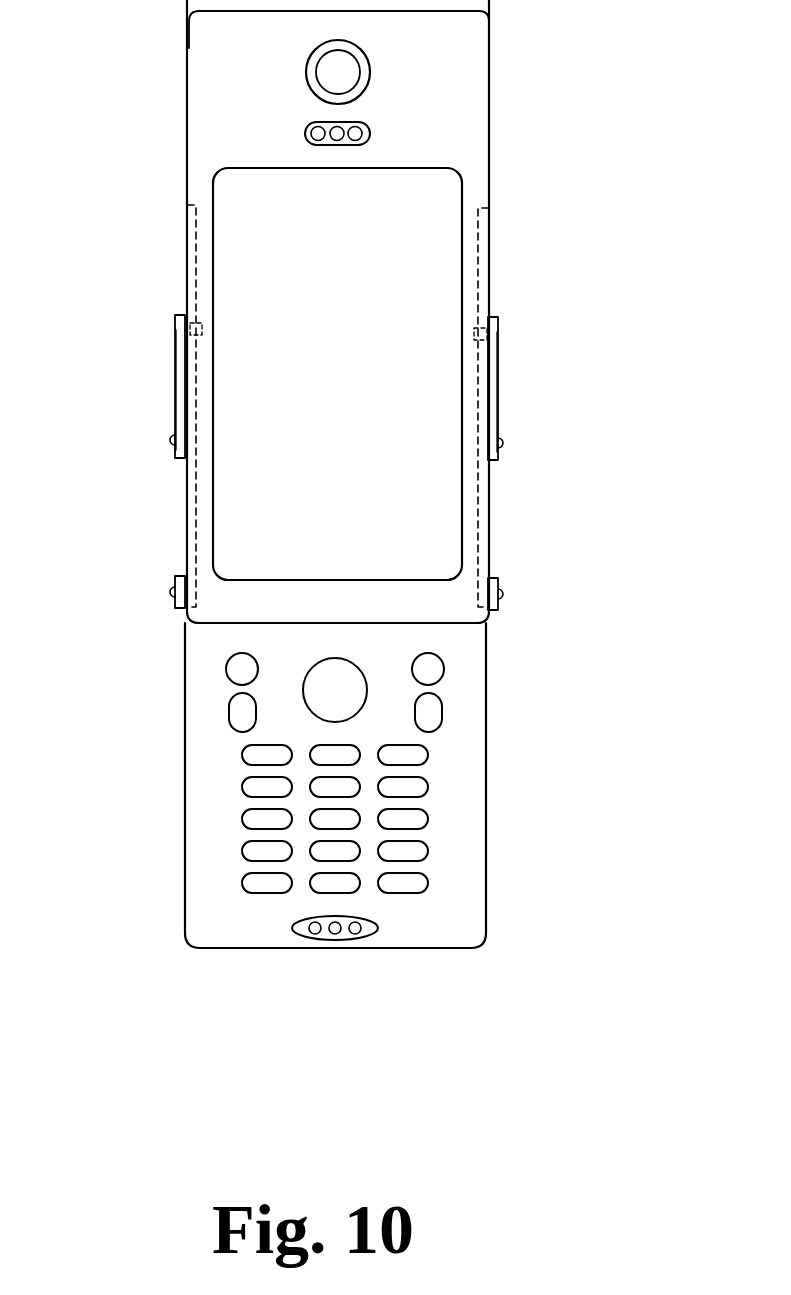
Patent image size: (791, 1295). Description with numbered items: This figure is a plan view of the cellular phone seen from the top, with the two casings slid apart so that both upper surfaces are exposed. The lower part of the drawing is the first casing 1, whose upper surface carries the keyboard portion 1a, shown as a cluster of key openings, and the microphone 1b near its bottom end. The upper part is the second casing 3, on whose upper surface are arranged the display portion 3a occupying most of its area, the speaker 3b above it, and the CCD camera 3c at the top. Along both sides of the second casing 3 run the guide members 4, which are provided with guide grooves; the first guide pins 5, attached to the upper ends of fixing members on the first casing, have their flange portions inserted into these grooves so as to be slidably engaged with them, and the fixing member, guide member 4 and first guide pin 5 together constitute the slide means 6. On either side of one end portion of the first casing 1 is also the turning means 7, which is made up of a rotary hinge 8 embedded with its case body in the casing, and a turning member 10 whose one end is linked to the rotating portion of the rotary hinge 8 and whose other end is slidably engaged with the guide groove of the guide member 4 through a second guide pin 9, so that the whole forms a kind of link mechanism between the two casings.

The first casing 1 is at (492, 750).
The keyboard portion 1a is at (428, 801).
The microphone 1b is at (336, 940).
The second casing 3 is at (489, 88).
The display portion 3a is at (370, 373).
The speaker 3b is at (371, 134).
The CCD camera 3c is at (369, 71).
The guide member 4 is at (196, 505).
The first guide pin 5 is at (172, 592).
The slide means 6 is at (178, 571).
The turning means 7 is at (172, 345).
The rotary hinge 8 is at (195, 322).
The second guide pin 9 is at (172, 440).
The turning member 10 is at (176, 326).